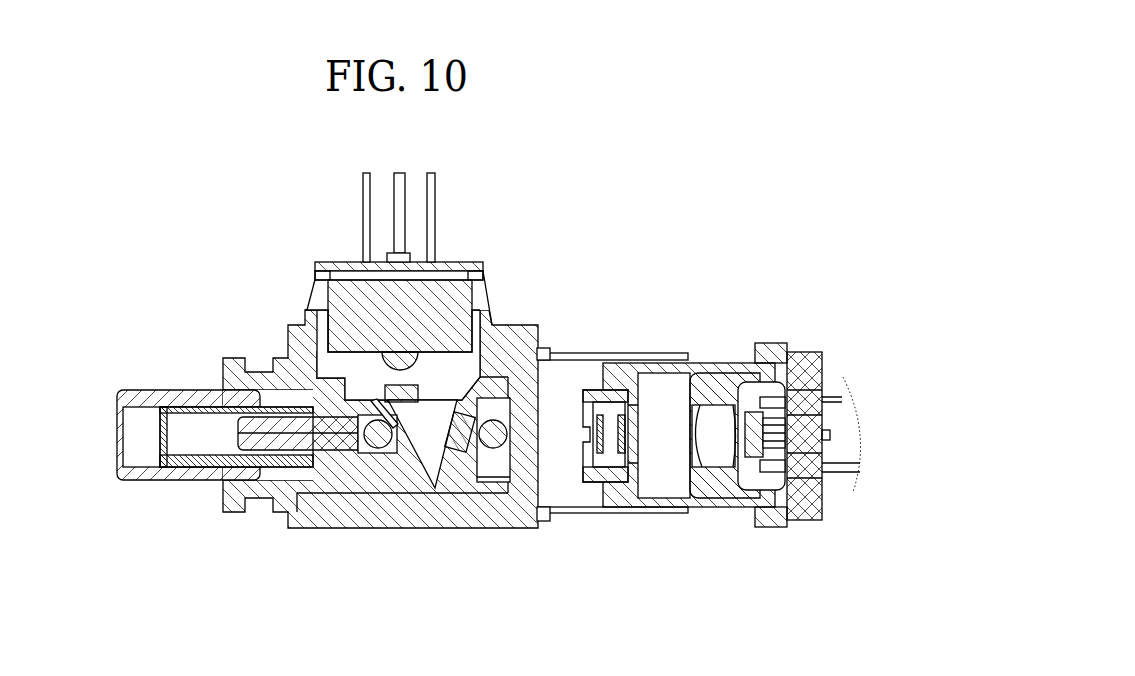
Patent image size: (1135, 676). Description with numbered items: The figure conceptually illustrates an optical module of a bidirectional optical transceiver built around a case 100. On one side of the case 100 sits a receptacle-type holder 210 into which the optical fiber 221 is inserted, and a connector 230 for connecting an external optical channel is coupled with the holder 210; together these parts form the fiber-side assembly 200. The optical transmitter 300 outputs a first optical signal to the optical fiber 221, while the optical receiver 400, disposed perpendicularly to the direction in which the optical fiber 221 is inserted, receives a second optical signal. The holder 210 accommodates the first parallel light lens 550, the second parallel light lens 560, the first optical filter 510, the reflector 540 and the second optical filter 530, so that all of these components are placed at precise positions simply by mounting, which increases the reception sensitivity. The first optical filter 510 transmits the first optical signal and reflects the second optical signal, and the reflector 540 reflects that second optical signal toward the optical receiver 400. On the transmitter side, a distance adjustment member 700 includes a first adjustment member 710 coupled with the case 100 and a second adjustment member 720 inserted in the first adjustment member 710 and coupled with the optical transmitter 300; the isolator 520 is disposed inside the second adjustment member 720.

The case 100 is at (443, 508).
The inlet port assembly 200 is at (345, 583).
The holder 210 is at (318, 483).
The optical fiber 221 is at (258, 468).
The connector 230 is at (177, 481).
The optical transmitter 300 is at (835, 368).
The optical receiver 400 is at (447, 298).
The first optical filter 510 is at (455, 453).
The isolator 520 is at (590, 483).
The second optical filter 530 is at (393, 385).
The reflector 540 is at (375, 398).
The first parallel light lens 550 is at (497, 474).
The second parallel light lens 560 is at (376, 455).
The distance adjustment member 700 is at (717, 301).
The first adjustment member 710 is at (622, 355).
The second adjustment member 720 is at (705, 362).